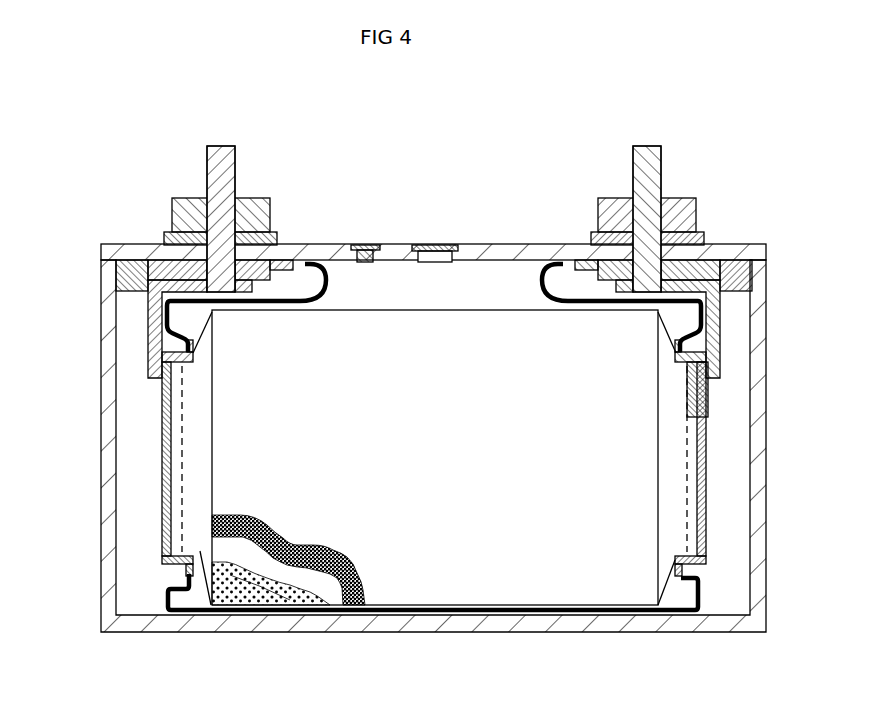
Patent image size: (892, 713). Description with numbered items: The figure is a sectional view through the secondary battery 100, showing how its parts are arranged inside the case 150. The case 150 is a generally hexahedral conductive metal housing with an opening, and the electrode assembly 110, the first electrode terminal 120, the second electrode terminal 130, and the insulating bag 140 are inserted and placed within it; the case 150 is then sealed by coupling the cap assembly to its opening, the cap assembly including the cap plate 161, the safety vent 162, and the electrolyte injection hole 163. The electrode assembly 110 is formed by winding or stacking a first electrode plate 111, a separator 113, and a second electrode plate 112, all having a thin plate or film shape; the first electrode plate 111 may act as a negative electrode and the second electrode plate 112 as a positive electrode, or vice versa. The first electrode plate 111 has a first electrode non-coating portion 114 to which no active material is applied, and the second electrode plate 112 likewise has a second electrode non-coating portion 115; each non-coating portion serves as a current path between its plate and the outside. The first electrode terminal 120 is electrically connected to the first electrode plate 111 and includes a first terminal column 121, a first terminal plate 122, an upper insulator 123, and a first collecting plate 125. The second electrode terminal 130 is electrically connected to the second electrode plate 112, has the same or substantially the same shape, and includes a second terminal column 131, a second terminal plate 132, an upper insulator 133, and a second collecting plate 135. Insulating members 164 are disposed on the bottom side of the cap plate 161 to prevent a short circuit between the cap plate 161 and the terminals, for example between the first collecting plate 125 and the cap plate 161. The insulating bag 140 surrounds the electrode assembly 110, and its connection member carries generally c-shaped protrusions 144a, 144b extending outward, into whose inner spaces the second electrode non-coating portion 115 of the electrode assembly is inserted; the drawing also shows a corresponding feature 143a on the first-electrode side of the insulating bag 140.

The secondary battery 100 is at (78, 82).
The electrode assembly 110 is at (426, 493).
The first electrode plate 111 is at (238, 604).
The second electrode plate 112 is at (356, 605).
The separator 113 is at (335, 602).
The first electrode non-coating portion 114 is at (186, 568).
The second electrode non-coating portion 115 is at (678, 538).
The first electrode terminal 120 is at (198, 184).
The first terminal column 121 is at (232, 175).
The first terminal plate 122 is at (180, 200).
The upper insulator 123 is at (163, 233).
The first collecting plate 125 is at (150, 327).
The second electrode terminal 130 is at (670, 184).
The second terminal column 131 is at (660, 171).
The second terminal plate 132 is at (688, 213).
The upper insulator 133 is at (596, 233).
The second collecting plate 135 is at (725, 318).
The insulating bag 140 is at (657, 612).
The first current collector 143a is at (163, 484).
The protrusion 144a is at (710, 425).
The protrusion 144b is at (700, 347).
The case 150 is at (100, 406).
The cap plate 161 is at (522, 252).
The safety vent 162 is at (448, 250).
The electrolyte injection hole 163 is at (367, 250).
The insulating members 164 is at (125, 278).